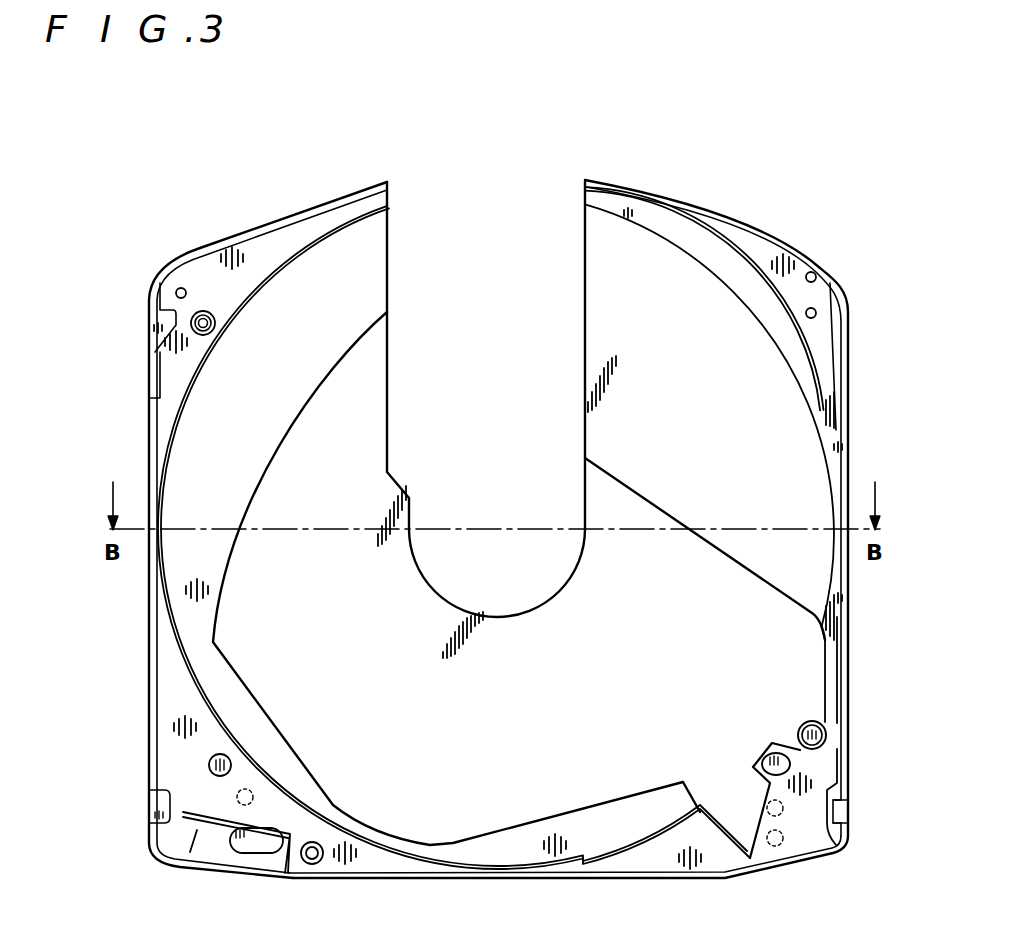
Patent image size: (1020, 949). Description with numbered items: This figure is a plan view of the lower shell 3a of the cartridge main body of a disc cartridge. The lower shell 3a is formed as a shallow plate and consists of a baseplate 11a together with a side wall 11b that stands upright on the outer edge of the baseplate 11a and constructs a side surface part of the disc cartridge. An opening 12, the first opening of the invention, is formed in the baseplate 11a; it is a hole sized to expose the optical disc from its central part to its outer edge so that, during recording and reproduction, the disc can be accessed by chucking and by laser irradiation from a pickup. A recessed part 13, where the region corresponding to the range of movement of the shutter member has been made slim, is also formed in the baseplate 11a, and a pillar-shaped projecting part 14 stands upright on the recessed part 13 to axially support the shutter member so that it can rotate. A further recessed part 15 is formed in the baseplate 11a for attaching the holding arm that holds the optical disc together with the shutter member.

The lower shell 3a is at (512, 141).
The baseplate 11a is at (682, 320).
The side wall 11b is at (636, 874).
The opening 12 is at (486, 198).
The recessed part 13 is at (504, 776).
The pillar-shaped projecting part 14 is at (818, 722).
The recessed part 15 is at (204, 308).